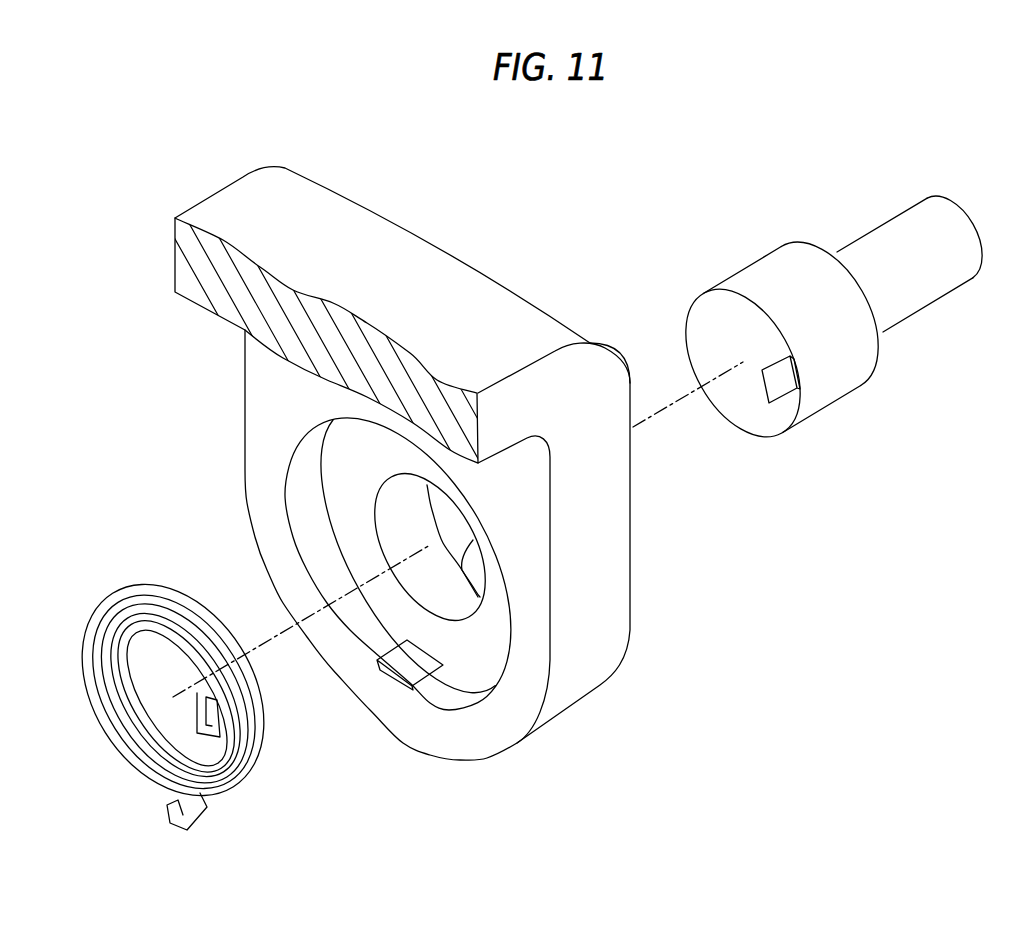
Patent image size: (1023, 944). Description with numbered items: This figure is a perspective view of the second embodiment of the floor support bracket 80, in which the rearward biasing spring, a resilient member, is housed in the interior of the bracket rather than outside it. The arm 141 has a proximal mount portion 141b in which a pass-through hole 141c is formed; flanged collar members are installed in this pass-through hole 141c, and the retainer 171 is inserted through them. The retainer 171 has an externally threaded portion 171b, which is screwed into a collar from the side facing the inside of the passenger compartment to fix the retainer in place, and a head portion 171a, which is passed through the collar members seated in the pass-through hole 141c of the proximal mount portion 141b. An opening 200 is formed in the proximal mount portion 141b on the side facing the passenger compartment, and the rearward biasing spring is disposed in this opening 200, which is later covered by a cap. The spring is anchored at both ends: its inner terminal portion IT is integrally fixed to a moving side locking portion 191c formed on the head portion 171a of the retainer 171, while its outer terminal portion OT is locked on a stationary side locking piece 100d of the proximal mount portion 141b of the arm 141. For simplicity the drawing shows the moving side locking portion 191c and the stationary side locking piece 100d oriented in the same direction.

The arm 141 is at (462, 252).
The proximal mount portion 141b is at (522, 548).
The pass-through hole 141c is at (470, 590).
The opening 200 is at (303, 470).
The stationary side locking piece 100d is at (396, 674).
The floor support bracket 80 is at (134, 572).
The inner terminal portion IT is at (222, 723).
The outer terminal portion OT is at (167, 808).
The retainer 171 is at (822, 319).
The head portion 171a is at (762, 268).
The externally threaded portion 171b is at (901, 228).
The moving side locking portion 191c is at (782, 397).